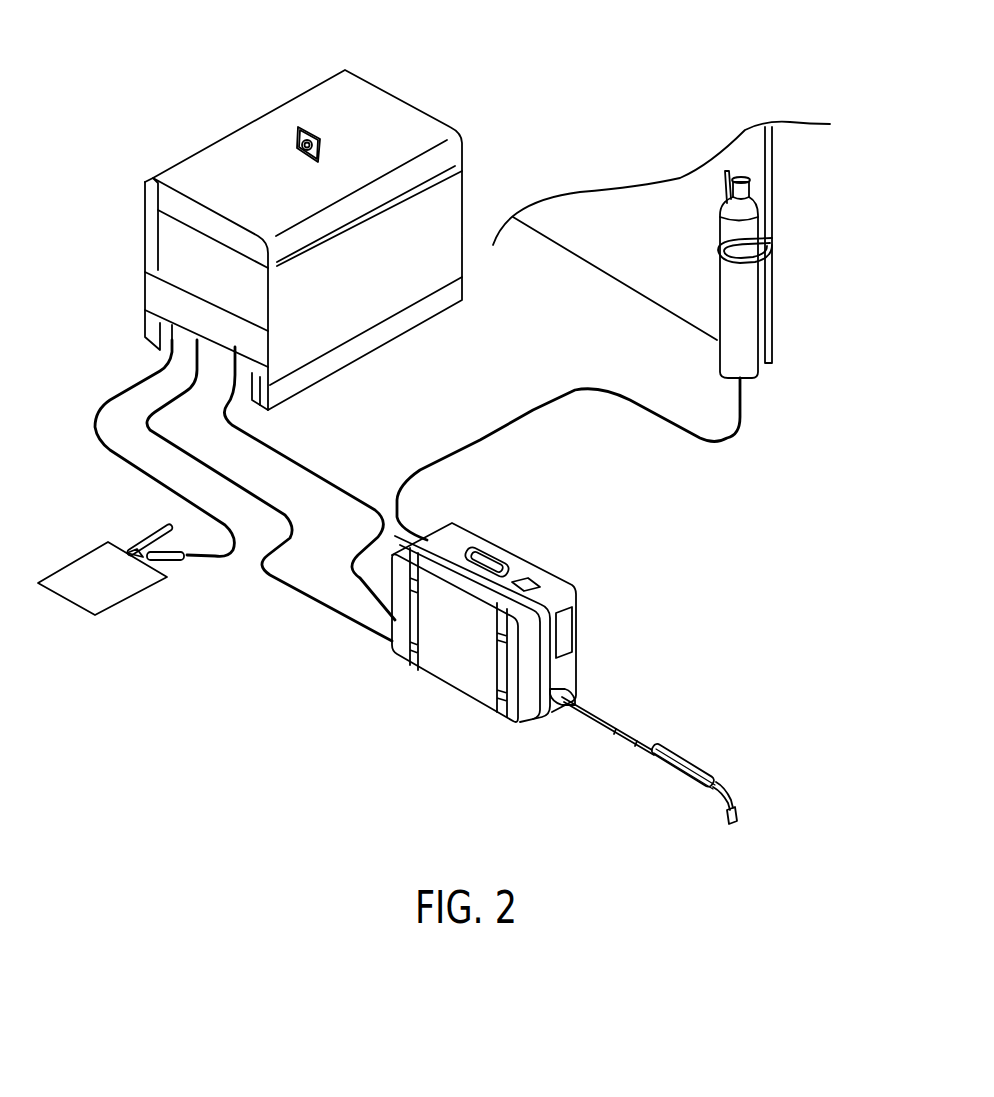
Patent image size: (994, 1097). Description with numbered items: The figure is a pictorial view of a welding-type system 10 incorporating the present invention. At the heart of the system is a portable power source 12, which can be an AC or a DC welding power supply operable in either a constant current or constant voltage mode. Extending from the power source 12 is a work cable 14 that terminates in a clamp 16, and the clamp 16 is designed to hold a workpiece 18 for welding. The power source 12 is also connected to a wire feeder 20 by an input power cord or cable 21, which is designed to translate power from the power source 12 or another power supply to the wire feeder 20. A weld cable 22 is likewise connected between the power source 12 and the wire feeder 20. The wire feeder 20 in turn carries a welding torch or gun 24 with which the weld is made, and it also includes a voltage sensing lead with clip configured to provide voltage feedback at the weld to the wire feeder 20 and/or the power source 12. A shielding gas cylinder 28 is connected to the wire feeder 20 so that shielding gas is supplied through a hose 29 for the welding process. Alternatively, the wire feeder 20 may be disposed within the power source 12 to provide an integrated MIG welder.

The welding-type system 10 is at (547, 78).
The portable power source 12 is at (243, 123).
The work cable 14 is at (125, 395).
The clamp 16 is at (177, 561).
The workpiece 18 is at (65, 600).
The wire feeder 20 is at (455, 697).
The input power cord or cable 21 is at (290, 452).
The weld cable 22 is at (152, 418).
The welding torch or gun 24 is at (694, 757).
The shielding gas cylinder 28 is at (725, 238).
The hose 29 is at (722, 440).